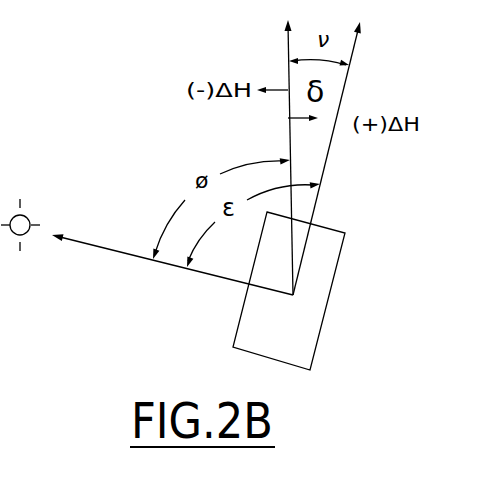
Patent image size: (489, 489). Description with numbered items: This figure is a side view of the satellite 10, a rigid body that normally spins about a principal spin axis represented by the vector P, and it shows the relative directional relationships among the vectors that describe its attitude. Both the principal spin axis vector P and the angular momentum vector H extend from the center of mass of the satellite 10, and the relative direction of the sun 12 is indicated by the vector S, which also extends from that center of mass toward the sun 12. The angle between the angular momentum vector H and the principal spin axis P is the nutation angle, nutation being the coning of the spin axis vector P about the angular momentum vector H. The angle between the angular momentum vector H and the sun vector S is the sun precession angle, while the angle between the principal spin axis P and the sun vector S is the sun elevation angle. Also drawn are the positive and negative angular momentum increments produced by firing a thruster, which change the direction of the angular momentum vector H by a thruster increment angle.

The satellite 10 is at (360, 251).
The sun 12 is at (27, 213).
The angular momentum vector H is at (272, 152).
The principal spin axis vector P is at (342, 152).
The sun vector S is at (172, 248).